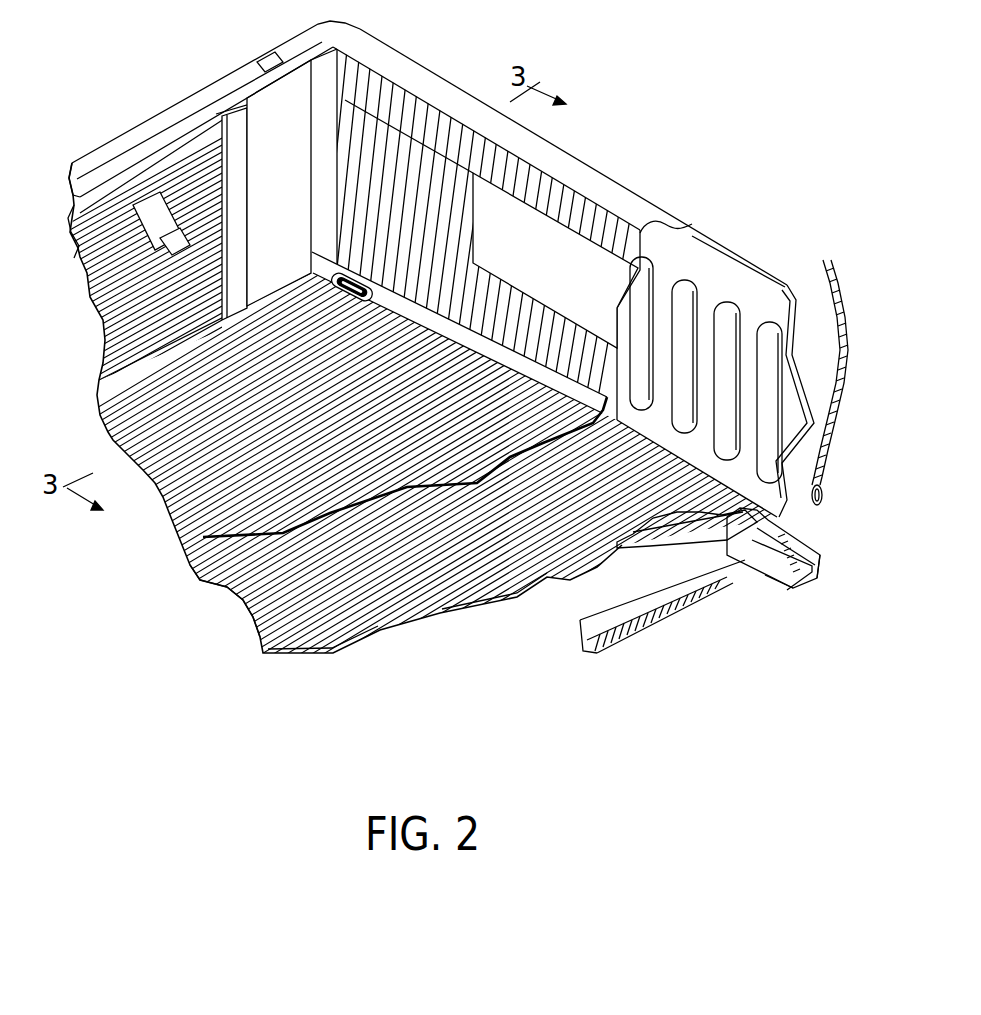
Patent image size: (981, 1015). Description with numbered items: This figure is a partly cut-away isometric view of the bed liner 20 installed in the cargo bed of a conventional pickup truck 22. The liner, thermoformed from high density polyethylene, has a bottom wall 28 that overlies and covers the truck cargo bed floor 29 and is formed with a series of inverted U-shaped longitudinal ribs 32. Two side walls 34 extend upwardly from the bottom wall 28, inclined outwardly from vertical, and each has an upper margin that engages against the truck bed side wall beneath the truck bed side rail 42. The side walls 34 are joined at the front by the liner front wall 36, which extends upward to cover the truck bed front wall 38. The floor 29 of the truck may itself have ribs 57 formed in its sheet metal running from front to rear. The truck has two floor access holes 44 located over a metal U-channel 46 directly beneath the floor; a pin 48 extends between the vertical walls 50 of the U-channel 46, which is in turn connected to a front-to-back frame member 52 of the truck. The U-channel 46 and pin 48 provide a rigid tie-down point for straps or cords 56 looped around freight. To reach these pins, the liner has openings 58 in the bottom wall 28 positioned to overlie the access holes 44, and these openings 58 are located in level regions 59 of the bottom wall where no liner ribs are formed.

The bed liner 20 is at (472, 96).
The pickup truck 22 is at (720, 247).
The bottom wall 28 is at (124, 465).
The truck cargo bed floor 29 is at (393, 630).
The longitudinal ribs 32 is at (98, 418).
The side walls 34 is at (72, 252).
The liner front wall 36 is at (594, 291).
The truck bed front wall 38 is at (722, 290).
The truck bed side rail 42 is at (86, 160).
The floor access holes 44 is at (655, 538).
The U-channel 46 is at (812, 533).
The pin 48 is at (807, 577).
The vertical walls 50 is at (824, 556).
The frame member 52 is at (640, 634).
The straps or cords 56 is at (850, 341).
The ribs 57 is at (243, 600).
The openings 58 is at (348, 276).
The level regions 59 is at (372, 299).